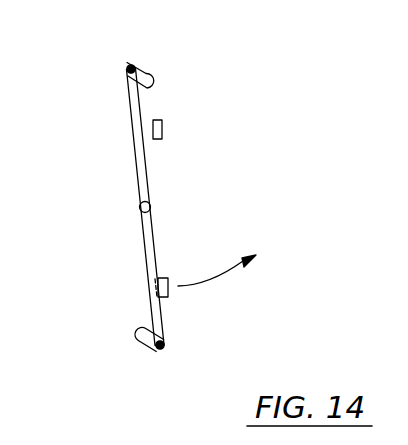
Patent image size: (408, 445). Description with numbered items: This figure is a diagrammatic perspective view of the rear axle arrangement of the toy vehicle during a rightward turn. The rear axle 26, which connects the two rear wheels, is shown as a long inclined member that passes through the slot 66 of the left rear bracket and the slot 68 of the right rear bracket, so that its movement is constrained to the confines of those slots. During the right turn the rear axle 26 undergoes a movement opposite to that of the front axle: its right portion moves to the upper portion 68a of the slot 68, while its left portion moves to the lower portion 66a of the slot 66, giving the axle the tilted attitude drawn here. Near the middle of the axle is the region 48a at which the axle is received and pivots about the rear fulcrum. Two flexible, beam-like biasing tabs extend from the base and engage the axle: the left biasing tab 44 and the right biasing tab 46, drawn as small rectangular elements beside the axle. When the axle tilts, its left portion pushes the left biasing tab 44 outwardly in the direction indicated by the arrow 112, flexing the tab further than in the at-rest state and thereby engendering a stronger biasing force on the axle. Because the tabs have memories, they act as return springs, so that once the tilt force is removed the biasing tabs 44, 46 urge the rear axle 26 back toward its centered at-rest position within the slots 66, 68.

The rear axle 26 is at (145, 236).
The left biasing tab 44 is at (172, 291).
The right biasing tab 46 is at (163, 131).
The intermediate pivot 48a is at (140, 206).
The slot of left bracket 66 is at (138, 342).
The lower portion of slot 66a is at (166, 346).
The slot of right bracket 68 is at (152, 73).
The upper portion of slot 68a is at (130, 69).
The arrow 112 is at (205, 280).